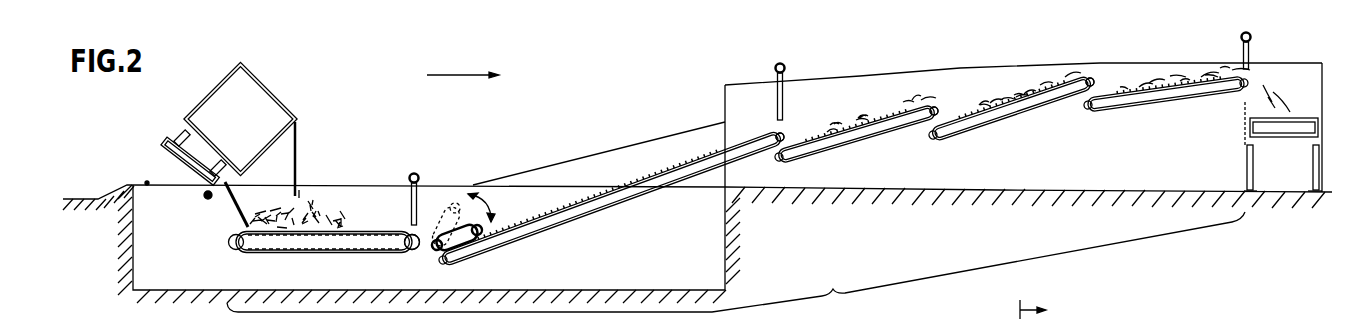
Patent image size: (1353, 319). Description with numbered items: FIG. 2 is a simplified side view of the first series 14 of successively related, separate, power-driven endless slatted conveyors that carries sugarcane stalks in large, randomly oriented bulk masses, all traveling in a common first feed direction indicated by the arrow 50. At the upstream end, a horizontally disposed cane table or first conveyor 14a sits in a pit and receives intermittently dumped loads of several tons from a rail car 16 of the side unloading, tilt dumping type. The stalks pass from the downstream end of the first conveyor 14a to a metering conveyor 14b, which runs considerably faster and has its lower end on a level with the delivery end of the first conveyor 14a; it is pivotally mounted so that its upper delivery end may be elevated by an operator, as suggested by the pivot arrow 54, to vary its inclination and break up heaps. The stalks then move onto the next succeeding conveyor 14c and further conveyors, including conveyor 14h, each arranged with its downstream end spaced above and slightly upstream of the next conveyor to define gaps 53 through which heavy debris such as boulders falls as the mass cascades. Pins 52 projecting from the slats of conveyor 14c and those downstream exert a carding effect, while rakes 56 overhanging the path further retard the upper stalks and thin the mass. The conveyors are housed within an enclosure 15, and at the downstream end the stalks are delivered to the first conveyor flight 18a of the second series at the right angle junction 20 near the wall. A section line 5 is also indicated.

The section line 5 is at (1043, 305).
The first series of conveyors 14 is at (736, 195).
The first conveyor 14a is at (276, 254).
The metering conveyor 14b is at (436, 261).
The next succeeding conveyor 14c is at (607, 187).
The last conveyor 14h is at (1124, 116).
The enclosure 15 is at (561, 155).
The rail car 16 is at (268, 92).
The first conveyor flight 18a is at (1302, 118).
The right angle junction 20 is at (1323, 63).
The arrow 50 is at (466, 74).
The pins 52 is at (567, 212).
The gaps 53 is at (426, 258).
The pivot arrow 54 is at (482, 200).
The rakes 56 is at (422, 195).